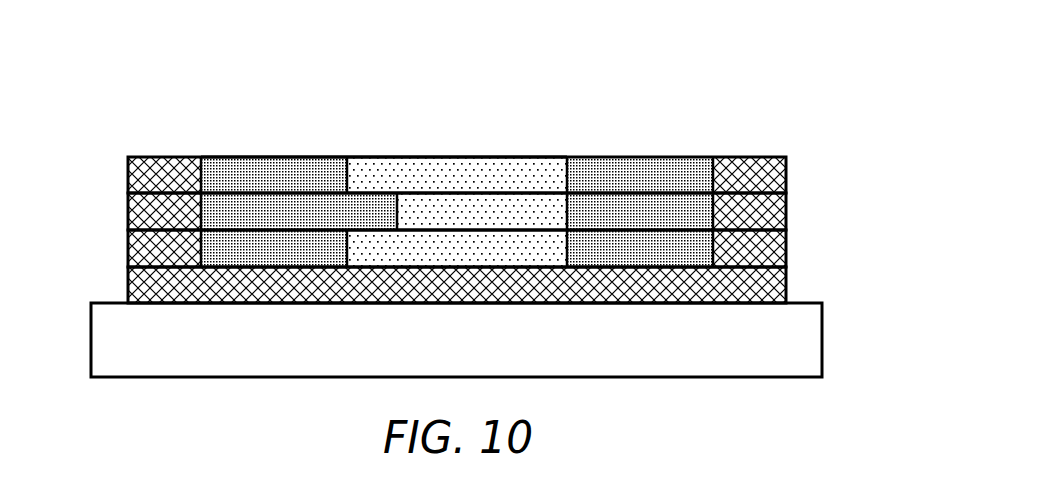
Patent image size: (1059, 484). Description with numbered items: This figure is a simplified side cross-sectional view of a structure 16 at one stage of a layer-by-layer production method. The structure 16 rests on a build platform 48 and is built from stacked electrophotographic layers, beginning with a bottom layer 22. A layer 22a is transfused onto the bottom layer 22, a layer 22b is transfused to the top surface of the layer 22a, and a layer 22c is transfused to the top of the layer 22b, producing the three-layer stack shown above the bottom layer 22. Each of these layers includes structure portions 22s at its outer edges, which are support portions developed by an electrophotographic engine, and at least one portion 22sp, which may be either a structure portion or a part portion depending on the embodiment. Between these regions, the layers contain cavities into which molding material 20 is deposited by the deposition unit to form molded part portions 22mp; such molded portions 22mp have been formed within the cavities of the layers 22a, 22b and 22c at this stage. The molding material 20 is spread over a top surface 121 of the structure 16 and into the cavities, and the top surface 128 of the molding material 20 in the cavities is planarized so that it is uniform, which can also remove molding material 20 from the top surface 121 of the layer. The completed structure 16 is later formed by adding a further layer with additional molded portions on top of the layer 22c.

The structure 16 is at (428, 167).
The molding material 20 is at (320, 158).
The layer 22 is at (140, 288).
The layer 22a is at (148, 250).
The layer 22b is at (147, 215).
The layer 22c is at (142, 182).
The structure portion 22s is at (165, 157).
The molded part portion 22mp is at (220, 158).
The portion 22sp is at (448, 158).
The build platform 48 is at (822, 323).
The top surface 121 is at (528, 156).
The top surface 128 is at (290, 156).